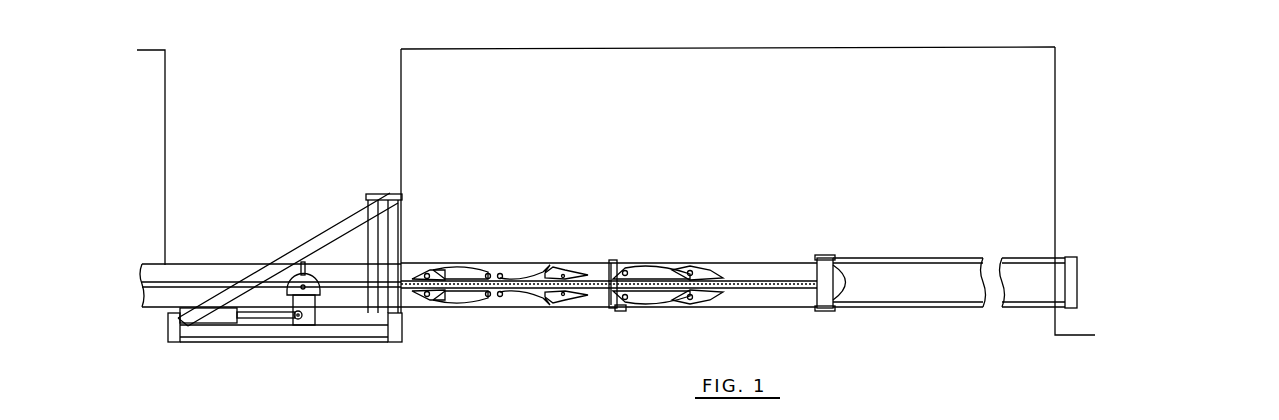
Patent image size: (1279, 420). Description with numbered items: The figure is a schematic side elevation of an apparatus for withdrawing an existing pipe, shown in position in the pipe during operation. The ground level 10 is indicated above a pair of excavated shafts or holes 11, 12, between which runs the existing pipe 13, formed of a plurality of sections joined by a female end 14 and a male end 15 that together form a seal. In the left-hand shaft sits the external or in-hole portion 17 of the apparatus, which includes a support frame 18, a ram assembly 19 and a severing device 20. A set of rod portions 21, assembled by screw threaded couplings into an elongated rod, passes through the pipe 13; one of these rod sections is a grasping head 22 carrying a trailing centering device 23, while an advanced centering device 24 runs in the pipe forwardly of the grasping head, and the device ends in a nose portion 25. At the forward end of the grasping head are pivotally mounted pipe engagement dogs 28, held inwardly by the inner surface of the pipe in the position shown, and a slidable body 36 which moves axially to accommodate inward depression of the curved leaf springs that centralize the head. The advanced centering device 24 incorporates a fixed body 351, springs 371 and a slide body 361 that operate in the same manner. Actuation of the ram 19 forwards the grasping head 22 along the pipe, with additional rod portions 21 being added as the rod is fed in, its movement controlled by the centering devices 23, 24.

The ground level 10 is at (922, 47).
The excavated shaft 11 is at (401, 115).
The excavated shaft 12 is at (1054, 108).
The existing pipe 13 is at (518, 308).
The female end 14 is at (617, 310).
The male end 15 is at (628, 307).
The external or in hole portion 17 is at (290, 245).
The support frame 18 is at (318, 330).
The ram assembly 19 is at (225, 315).
The severing device 20 is at (366, 265).
The rod portions 21 is at (345, 282).
The grasping head 22 is at (512, 275).
The trailing centering device 23 is at (468, 265).
The advanced centering device 24 is at (700, 255).
The nose portion 25 is at (850, 283).
The pipe engagement dogs 28 is at (563, 272).
The slidable body 36 is at (417, 273).
The slide body 361 is at (653, 270).
The fixed body 351 is at (717, 292).
The springs 371 is at (673, 298).